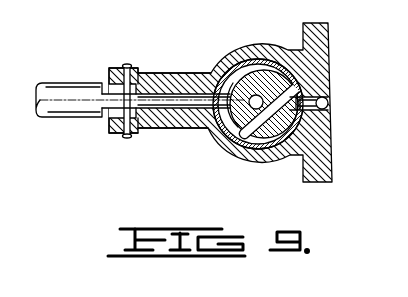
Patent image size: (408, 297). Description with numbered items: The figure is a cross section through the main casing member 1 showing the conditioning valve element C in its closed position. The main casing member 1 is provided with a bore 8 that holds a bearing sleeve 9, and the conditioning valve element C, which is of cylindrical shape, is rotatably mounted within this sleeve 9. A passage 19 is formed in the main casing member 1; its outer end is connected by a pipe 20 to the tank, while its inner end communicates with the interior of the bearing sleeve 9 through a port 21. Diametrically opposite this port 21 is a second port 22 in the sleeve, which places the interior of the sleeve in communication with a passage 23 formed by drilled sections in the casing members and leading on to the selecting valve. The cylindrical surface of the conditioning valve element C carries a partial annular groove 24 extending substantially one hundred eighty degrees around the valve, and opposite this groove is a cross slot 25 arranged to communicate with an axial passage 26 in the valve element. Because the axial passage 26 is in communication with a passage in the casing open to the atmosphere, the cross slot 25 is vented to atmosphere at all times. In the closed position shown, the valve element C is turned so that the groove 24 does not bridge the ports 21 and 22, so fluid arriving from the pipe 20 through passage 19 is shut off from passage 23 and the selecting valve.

The main casing member 1 is at (324, 40).
The bore 8 is at (298, 70).
The bearing sleeve 9 is at (213, 72).
The passage 19 is at (184, 104).
The pipe 20 is at (73, 110).
The port 21 is at (211, 122).
The second port 22 is at (309, 111).
The passage 23 is at (331, 103).
The partial annular groove 24 is at (246, 78).
The cross slot 25 is at (272, 127).
The axial passage 26 is at (256, 95).
The conditioning valve element C is at (240, 131).